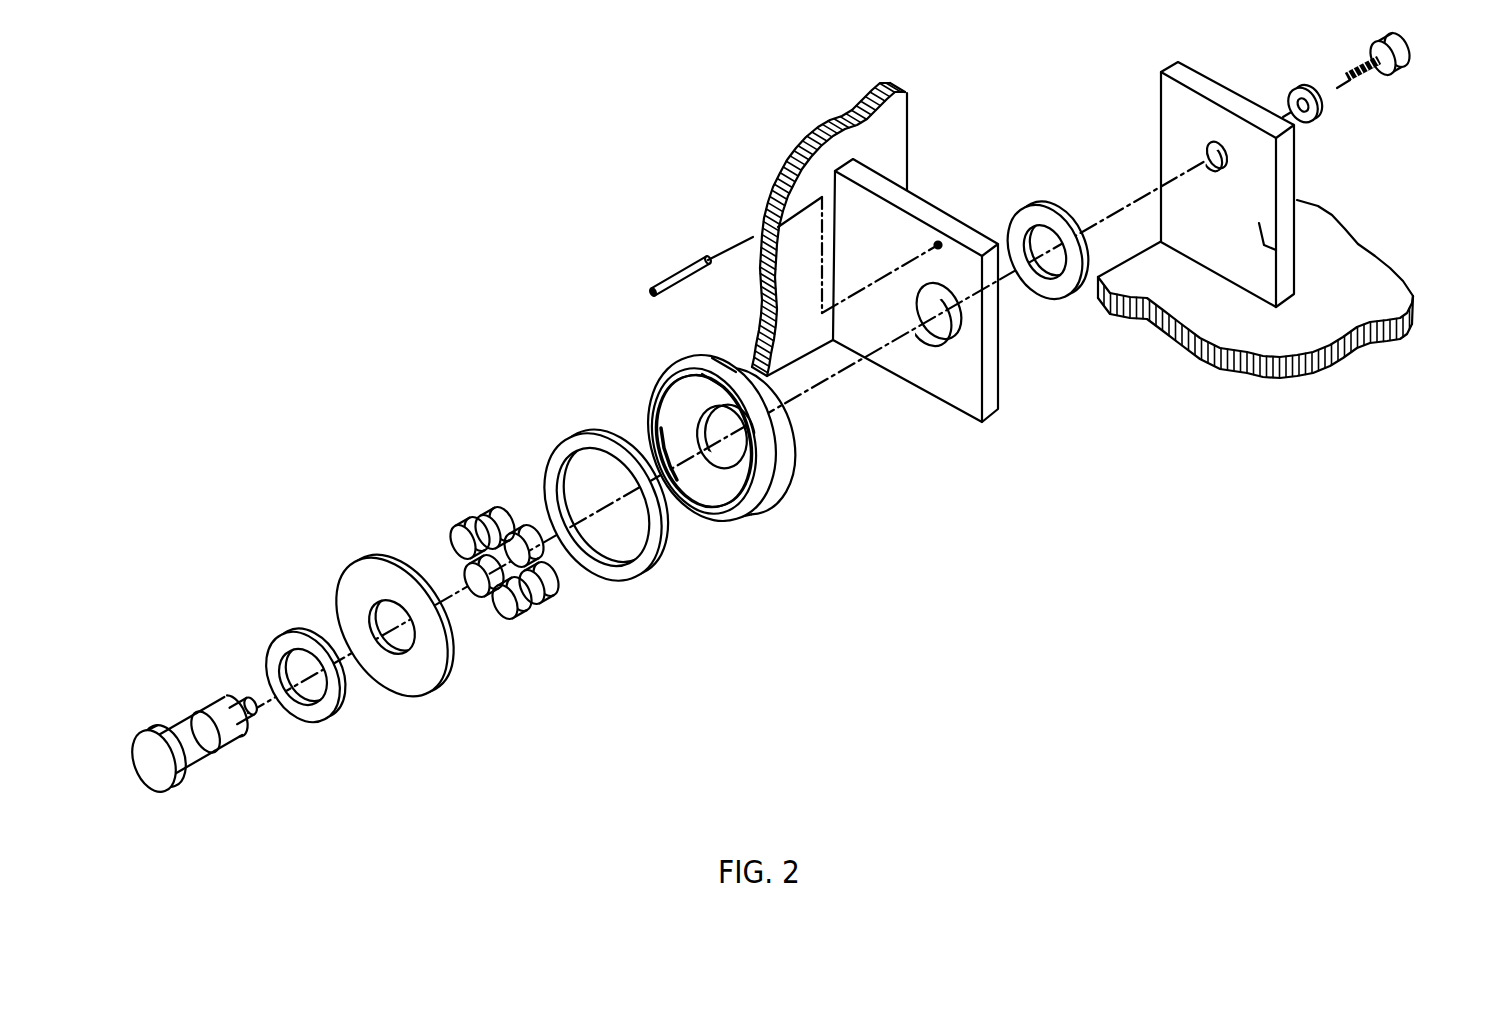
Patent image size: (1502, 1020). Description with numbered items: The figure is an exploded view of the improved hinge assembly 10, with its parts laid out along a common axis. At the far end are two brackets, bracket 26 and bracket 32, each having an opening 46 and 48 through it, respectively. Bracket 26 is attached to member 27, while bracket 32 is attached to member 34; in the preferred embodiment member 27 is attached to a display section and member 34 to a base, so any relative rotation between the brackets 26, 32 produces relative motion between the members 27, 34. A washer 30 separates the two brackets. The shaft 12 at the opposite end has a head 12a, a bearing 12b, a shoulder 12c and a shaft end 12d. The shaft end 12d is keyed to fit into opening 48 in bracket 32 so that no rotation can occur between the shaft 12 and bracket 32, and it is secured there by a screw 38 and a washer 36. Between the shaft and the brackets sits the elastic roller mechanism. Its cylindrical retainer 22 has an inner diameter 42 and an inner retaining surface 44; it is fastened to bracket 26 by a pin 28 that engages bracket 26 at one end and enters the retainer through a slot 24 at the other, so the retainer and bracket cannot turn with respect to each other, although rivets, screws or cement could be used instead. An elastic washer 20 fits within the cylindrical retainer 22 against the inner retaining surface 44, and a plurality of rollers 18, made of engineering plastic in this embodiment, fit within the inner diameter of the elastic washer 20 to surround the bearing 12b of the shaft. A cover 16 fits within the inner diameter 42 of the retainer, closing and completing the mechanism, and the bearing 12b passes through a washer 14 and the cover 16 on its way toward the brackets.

The hinge assembly 10 is at (471, 311).
The shaft 12 is at (189, 733).
The head 12a is at (142, 758).
The bearing 12b is at (172, 728).
The shoulder 12c is at (181, 700).
The shaft end 12d is at (215, 694).
The washer 14 is at (314, 702).
The cover 16 is at (397, 646).
The rollers 18 is at (504, 595).
The elastic washer 20 is at (609, 526).
The cylindrical retainer 22 is at (676, 452).
The slot 24 is at (708, 355).
The bracket 26 is at (952, 309).
The member 27 is at (866, 229).
The pin 28 is at (708, 247).
The washer 30 is at (1055, 274).
The bracket 32 is at (1281, 289).
The member 34 is at (1314, 184).
The washer 36 is at (1328, 134).
The screw 38 is at (1398, 85).
The inner diameter 42 is at (661, 440).
The inner retaining surface 44 is at (664, 427).
The opening 46 is at (985, 327).
The opening 48 is at (1276, 175).